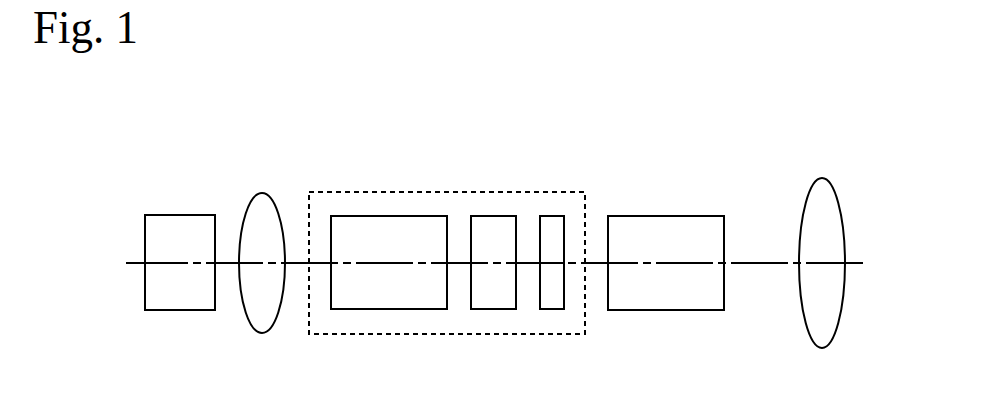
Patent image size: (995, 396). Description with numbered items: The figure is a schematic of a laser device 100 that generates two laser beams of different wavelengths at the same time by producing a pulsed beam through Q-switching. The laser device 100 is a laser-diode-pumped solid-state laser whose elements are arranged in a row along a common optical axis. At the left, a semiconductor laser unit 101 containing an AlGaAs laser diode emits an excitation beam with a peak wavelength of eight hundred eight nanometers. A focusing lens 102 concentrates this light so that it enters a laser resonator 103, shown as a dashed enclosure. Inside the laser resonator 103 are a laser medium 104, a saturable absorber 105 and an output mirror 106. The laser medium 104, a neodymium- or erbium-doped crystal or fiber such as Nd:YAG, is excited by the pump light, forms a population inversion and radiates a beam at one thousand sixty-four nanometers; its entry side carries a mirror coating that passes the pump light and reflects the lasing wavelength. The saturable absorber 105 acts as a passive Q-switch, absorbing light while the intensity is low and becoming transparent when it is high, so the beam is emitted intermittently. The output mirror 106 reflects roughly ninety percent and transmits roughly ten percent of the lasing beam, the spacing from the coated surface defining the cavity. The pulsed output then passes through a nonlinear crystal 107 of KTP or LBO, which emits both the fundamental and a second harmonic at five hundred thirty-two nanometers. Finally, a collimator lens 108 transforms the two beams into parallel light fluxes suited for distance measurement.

The laser device 100 is at (447, 148).
The semiconductor laser unit 101 is at (179, 226).
The focusing lens 102 is at (262, 205).
The laser resonator 103 is at (325, 190).
The laser medium 104 is at (386, 223).
The saturable absorber 105 is at (485, 223).
The output mirror 106 is at (551, 223).
The nonlinear crystal 107 is at (663, 230).
The collimator lens 108 is at (820, 195).